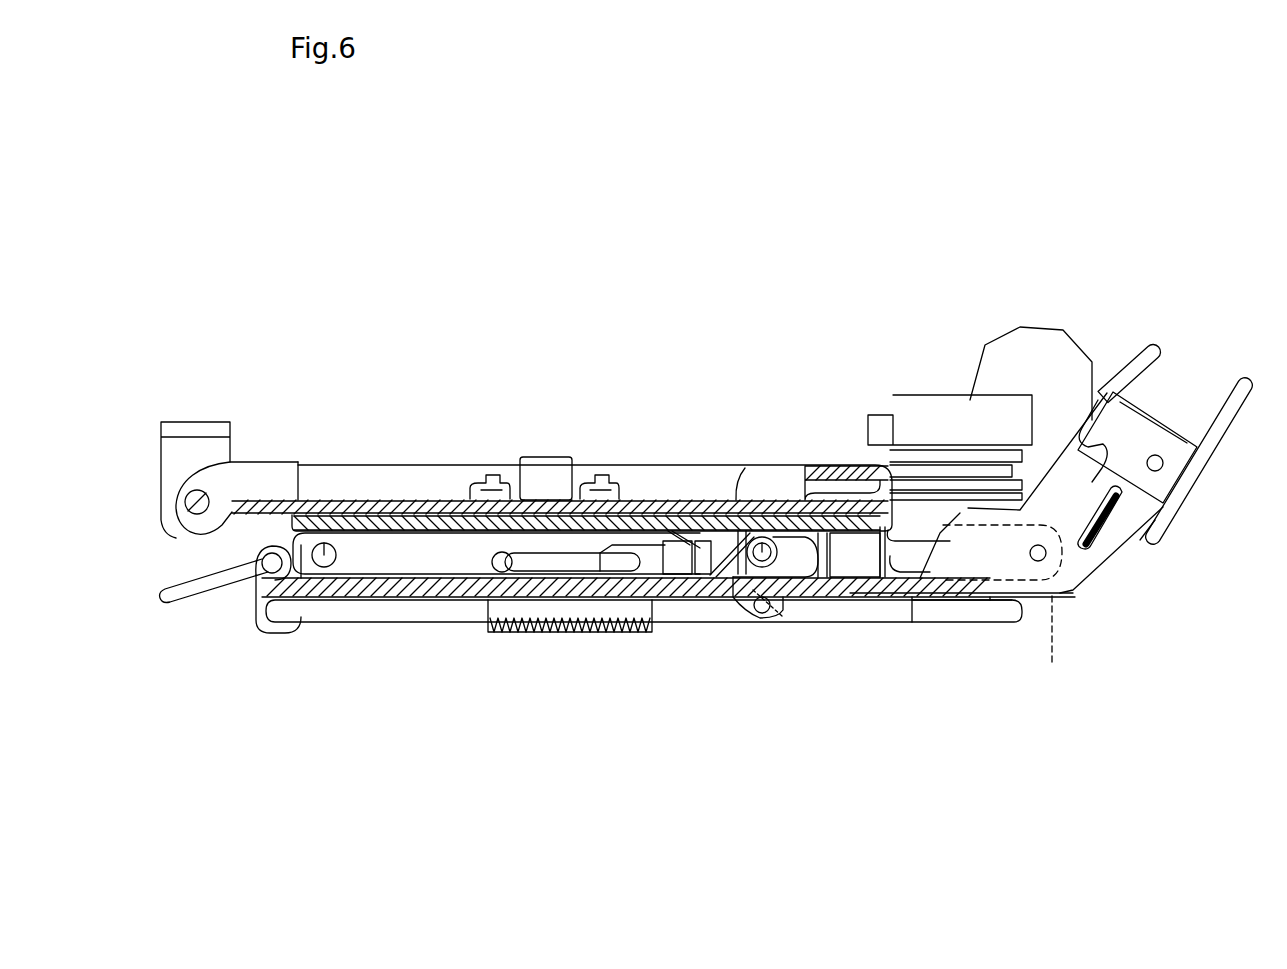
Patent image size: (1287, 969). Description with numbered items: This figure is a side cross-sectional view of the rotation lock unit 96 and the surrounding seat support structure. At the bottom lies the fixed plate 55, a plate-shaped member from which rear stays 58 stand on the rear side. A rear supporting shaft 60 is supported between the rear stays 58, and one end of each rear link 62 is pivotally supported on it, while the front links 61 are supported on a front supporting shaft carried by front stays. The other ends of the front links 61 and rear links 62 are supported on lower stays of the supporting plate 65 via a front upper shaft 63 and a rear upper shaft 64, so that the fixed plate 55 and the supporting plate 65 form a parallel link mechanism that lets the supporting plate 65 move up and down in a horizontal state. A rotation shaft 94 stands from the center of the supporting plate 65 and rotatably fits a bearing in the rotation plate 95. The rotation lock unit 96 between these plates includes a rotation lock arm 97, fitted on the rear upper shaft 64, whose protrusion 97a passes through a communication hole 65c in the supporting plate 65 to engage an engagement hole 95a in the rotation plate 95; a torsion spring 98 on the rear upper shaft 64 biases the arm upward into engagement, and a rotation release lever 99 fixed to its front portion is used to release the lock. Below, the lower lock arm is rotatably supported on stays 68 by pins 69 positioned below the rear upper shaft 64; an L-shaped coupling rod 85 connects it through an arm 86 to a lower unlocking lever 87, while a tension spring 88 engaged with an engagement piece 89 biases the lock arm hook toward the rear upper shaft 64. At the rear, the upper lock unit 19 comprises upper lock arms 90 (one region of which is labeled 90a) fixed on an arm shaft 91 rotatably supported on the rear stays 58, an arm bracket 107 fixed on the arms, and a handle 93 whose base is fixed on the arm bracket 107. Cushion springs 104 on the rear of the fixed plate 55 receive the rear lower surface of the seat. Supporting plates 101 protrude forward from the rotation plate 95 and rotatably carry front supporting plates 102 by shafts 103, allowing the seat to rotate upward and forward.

The upper lock unit 19 is at (1205, 312).
The fixed plate 55 is at (897, 597).
The rear stays 58 is at (1127, 543).
The rear supporting shaft 60 is at (1045, 557).
The front links 61 is at (362, 500).
The rear links 62 is at (1065, 648).
The front upper shaft 63 is at (320, 498).
The rear upper shaft 64 is at (763, 535).
The supporting plate 65 is at (453, 496).
The communication hole 65c is at (793, 490).
The stays 68 is at (945, 605).
The pins 69 is at (777, 620).
The coupling rod 85 is at (340, 622).
The arm 86 is at (262, 628).
The lower unlocking lever 87 is at (186, 590).
The spring 88 is at (495, 632).
The engagement piece 89 is at (435, 624).
The upper lock arms 90 is at (1165, 413).
The bar 90a is at (1110, 452).
The arm shaft 91 is at (1195, 495).
The handle 93 is at (1242, 385).
The rotation shaft 94 is at (563, 475).
The rotation plate 95 is at (392, 485).
The engagement hole 95a is at (677, 498).
The rotation lock unit 96 is at (750, 445).
The rotation lock arm 97 is at (668, 600).
The protrusion 97a is at (735, 498).
The spring 98 is at (737, 613).
The rotation release lever 99 is at (580, 612).
The supporting plates 101 is at (263, 495).
The front supporting plates 102 is at (188, 420).
The shafts 103 is at (176, 538).
The cushion springs 104 is at (980, 410).
The arm bracket 107 is at (1157, 430).